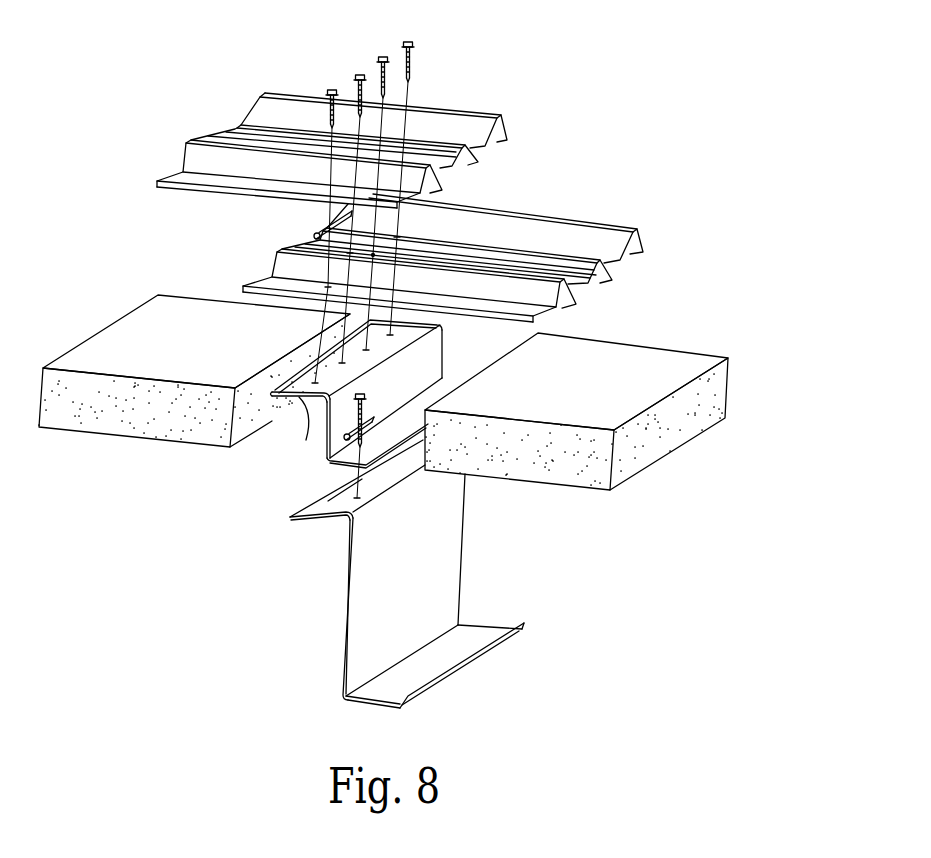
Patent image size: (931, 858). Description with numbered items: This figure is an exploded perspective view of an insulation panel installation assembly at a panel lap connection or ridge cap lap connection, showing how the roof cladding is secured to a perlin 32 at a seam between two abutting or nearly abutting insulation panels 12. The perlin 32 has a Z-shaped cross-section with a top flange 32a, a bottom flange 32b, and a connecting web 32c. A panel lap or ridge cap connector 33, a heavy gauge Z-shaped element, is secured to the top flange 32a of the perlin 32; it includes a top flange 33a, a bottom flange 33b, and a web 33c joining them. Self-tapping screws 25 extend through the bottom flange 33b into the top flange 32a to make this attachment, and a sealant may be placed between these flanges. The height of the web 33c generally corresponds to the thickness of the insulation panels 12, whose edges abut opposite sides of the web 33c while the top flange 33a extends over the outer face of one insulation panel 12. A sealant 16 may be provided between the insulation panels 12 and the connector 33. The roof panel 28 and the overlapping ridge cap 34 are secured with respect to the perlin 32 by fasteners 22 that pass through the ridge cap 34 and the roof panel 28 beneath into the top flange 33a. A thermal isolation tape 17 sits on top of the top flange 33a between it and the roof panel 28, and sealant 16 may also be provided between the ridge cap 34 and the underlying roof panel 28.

The insulation panel 12 is at (110, 327).
The sealant 16 is at (314, 235).
The thermal isolation tape 17 is at (301, 402).
The fastener 22 is at (410, 42).
The self-tapping screw 25 is at (329, 498).
The roof panel 28 is at (629, 206).
The perlin 32 is at (400, 574).
The top flange 32a is at (332, 522).
The bottom flange 32b is at (456, 676).
The connecting web 32c is at (346, 612).
The panel lap or ridge cap connector 33 is at (352, 423).
The top flange 33a is at (272, 394).
The bottom flange 33b is at (397, 448).
The web 33c is at (426, 362).
The ridge cap 34 is at (484, 99).